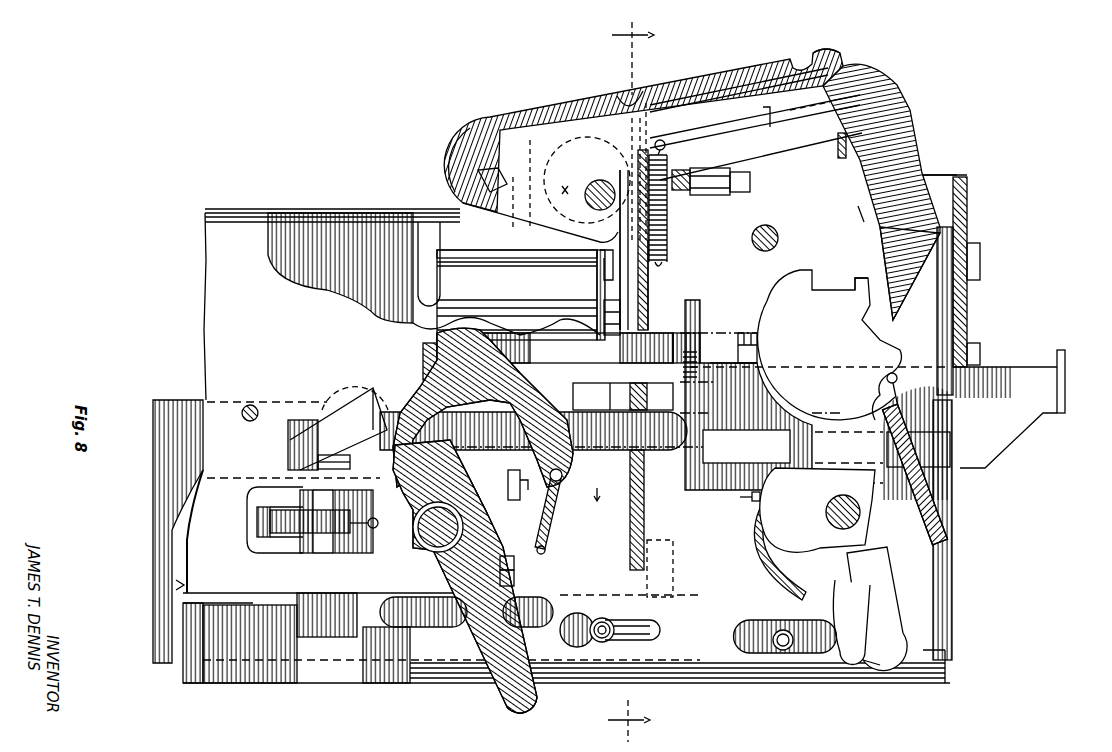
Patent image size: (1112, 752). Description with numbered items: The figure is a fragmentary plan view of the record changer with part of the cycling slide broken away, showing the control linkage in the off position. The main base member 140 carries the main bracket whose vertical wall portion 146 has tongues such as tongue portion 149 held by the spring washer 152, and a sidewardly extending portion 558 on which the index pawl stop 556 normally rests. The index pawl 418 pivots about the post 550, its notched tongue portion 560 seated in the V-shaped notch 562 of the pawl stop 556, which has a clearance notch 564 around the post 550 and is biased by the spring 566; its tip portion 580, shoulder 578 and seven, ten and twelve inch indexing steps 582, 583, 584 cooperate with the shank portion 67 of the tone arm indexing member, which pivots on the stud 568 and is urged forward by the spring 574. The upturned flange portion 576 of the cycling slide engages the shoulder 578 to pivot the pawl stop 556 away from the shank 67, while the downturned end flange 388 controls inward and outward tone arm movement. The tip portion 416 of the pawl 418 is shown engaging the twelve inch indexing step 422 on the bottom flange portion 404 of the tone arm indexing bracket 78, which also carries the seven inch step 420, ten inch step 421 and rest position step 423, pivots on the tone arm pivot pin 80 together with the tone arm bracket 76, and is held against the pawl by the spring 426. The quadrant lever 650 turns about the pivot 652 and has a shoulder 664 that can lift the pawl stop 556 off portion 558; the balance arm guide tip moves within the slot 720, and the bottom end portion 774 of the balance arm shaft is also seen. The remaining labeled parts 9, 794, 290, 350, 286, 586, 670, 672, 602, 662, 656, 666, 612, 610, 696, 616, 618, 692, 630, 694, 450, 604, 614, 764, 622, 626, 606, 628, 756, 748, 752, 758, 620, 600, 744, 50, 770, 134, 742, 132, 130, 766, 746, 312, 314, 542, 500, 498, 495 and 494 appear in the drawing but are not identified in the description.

The section line 9- 9 is at (631, 381).
The main base member 140 is at (205, 318).
The housing block 794 is at (385, 213).
The left housing wall 290 is at (200, 395).
The wall recess 350 is at (176, 585).
The lower frame block 286 is at (270, 592).
The index pawl stop 556 is at (600, 106).
The notched tongue portion 560 is at (523, 118).
The clearance notch 564 is at (553, 112).
The tip portion 580 is at (818, 50).
The index pawl 418 is at (868, 72).
The quadrant lever 650 is at (625, 100).
The sidewardly extending portion 558 is at (647, 97).
The twelve inch indexing step 584 is at (817, 105).
The seven inch indexing step 582 is at (718, 150).
The ten inch indexing step 583 is at (761, 143).
The bolt strip 586 is at (842, 158).
The bolt tab 670 is at (860, 214).
The V-shaped notch 562 is at (452, 175).
The shoulder 664 is at (610, 179).
The post 550 is at (618, 186).
The center mark 672 is at (580, 191).
The spring 566 is at (668, 240).
The spring 574 is at (680, 193).
The stud 568 is at (712, 195).
The shank portion 67 is at (752, 188).
The bottom end portion 774 is at (779, 240).
The upturned flange portion 576 is at (490, 250).
The guide block 602 is at (525, 295).
The shoulder 578 is at (517, 299).
The housing contour 662 is at (506, 320).
The pivot 652 is at (622, 300).
The firing pin collar 656 is at (628, 316).
The slot 720 is at (648, 302).
The slide bar 666 is at (576, 349).
The frame strip 612 is at (688, 335).
The frame lug 610 is at (745, 333).
The cavity wall 696 is at (760, 318).
The seven inch indexing step 420 is at (798, 274).
The ten inch indexing step 421 is at (862, 290).
The twelve inch indexing step 422 is at (888, 324).
The tip portion 416 is at (953, 322).
The rest position indexing step 423 is at (958, 343).
The downturned end flange 388 is at (1058, 352).
The lever tab 616 is at (430, 343).
The block 618 is at (288, 440).
The bolt 692 is at (282, 475).
The link 630 is at (352, 406).
The arc 694 is at (372, 386).
The pin 450 is at (250, 404).
The slide bar 604 is at (586, 455).
The lever 614 is at (430, 362).
The lever edge 764 is at (456, 464).
The pin 622 is at (418, 480).
The box 626 is at (574, 398).
The tongue portion 149 is at (602, 396).
The spring washer 152 is at (640, 402).
The frame block 606 is at (733, 385).
The block 628 is at (735, 449).
The spring housing 756 is at (250, 494).
The spring 748 is at (250, 550).
The spring cap 752 is at (283, 566).
The block 758 is at (330, 560).
The pin 620 is at (375, 511).
The vertical wall portion 146 is at (630, 520).
The mark 600 is at (613, 497).
The catch 744 is at (526, 482).
The hammer 50 is at (465, 576).
The hammer pivot 770 is at (413, 530).
The hammer tip 134 is at (512, 710).
The rod 742 is at (548, 528).
The pivot 132 is at (565, 478).
The pin 130 is at (546, 551).
The block 766 is at (515, 560).
The block 746 is at (515, 578).
The knob 312 is at (596, 648).
The link 314 is at (652, 642).
The tone arm indexing bracket 78 is at (752, 497).
The tone arm bracket 76 is at (752, 557).
The bottom flange portion 404 is at (810, 525).
The tone arm pivot pin 80 is at (827, 508).
The arm 542 is at (900, 544).
The arm 500 is at (845, 660).
The arm tip 498 is at (888, 662).
The spring 426 is at (965, 492).
The block 495 is at (748, 655).
The pin 494 is at (785, 652).